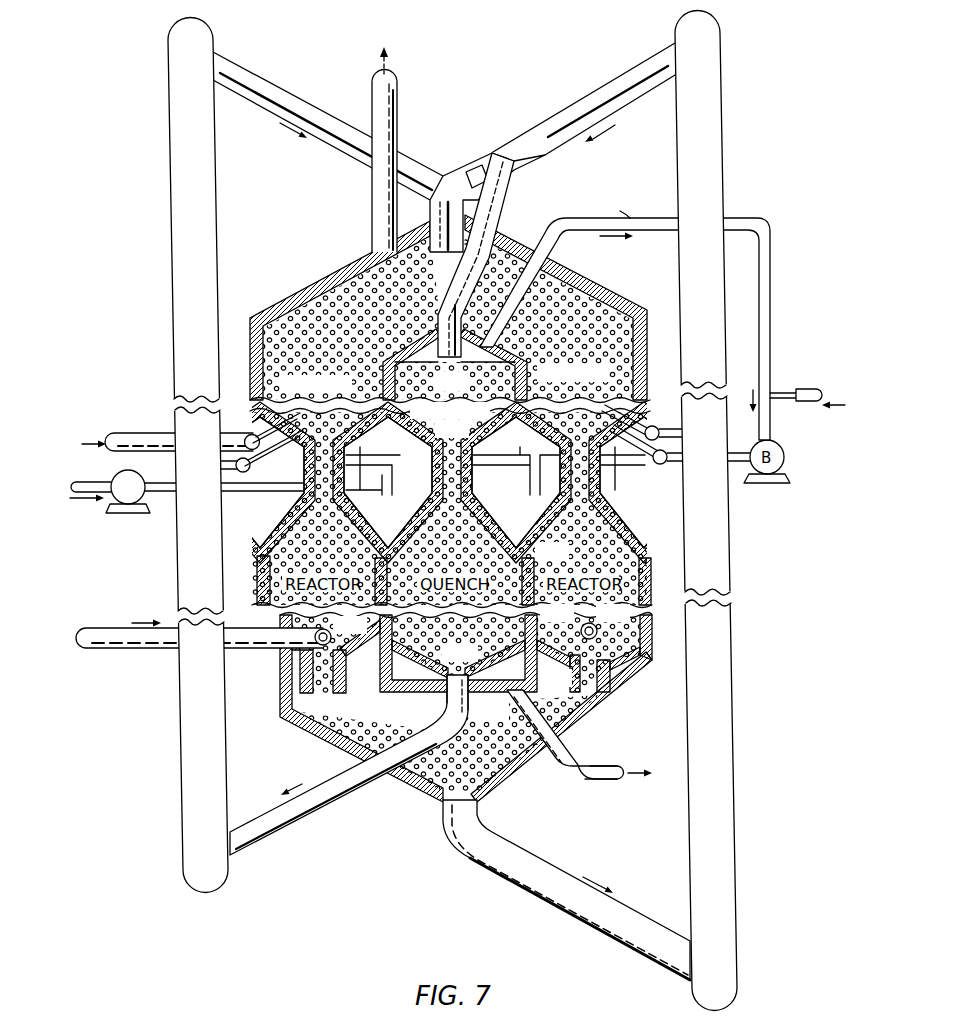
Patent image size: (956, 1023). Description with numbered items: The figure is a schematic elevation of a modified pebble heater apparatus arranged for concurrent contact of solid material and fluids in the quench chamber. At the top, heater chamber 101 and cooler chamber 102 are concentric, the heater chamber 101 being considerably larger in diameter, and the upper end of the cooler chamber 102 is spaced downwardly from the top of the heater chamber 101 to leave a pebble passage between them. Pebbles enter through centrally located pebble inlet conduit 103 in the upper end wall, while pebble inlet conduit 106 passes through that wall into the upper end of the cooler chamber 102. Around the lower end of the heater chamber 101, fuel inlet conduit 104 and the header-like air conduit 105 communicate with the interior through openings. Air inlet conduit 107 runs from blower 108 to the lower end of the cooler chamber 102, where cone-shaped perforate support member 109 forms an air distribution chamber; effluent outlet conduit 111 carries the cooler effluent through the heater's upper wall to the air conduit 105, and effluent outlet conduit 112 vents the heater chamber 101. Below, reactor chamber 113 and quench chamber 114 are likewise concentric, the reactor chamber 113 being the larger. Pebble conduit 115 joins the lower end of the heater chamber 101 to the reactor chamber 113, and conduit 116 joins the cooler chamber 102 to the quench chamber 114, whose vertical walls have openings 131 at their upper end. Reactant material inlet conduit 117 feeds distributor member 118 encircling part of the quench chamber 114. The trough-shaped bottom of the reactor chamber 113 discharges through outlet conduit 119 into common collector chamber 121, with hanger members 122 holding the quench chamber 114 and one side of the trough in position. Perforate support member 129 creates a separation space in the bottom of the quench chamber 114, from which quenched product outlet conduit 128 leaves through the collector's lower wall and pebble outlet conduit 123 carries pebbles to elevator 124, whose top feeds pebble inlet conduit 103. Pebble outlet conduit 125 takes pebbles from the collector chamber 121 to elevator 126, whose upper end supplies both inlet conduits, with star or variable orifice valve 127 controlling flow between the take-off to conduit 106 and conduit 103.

The heater chamber 101 is at (647, 362).
The cooler chamber 102 is at (467, 390).
The pebble inlet conduit 103 is at (446, 182).
The fuel inlet conduit 104 is at (128, 434).
The air conduit 105 is at (658, 466).
The pebble inlet conduit 106 is at (509, 188).
The air inlet conduit 107 is at (272, 486).
The blower 108 is at (134, 478).
The perforate support member 109 is at (472, 438).
The effluent outlet conduit 111 is at (550, 233).
The effluent outlet conduit 112 is at (372, 208).
The reactor chamber 113 is at (652, 616).
The quench chamber 114 is at (537, 614).
The pebble conduit 115 is at (518, 483).
The conduit 116 is at (447, 481).
The reactant material inlet conduit 117 is at (135, 650).
The distributor member 118 is at (336, 624).
The outlet conduit 119 is at (583, 677).
The common collector chamber 121 is at (619, 718).
The hanger members 122 is at (517, 708).
The pebble outlet conduit 123 is at (322, 806).
The elevator 124 is at (179, 552).
The pebble outlet conduit 125 is at (478, 814).
The elevator 126 is at (729, 550).
The star or variable orifice valve 127 is at (476, 170).
The quenched product outlet conduit 128 is at (576, 778).
The perforate support member 129 is at (438, 668).
The openings 131 is at (528, 565).